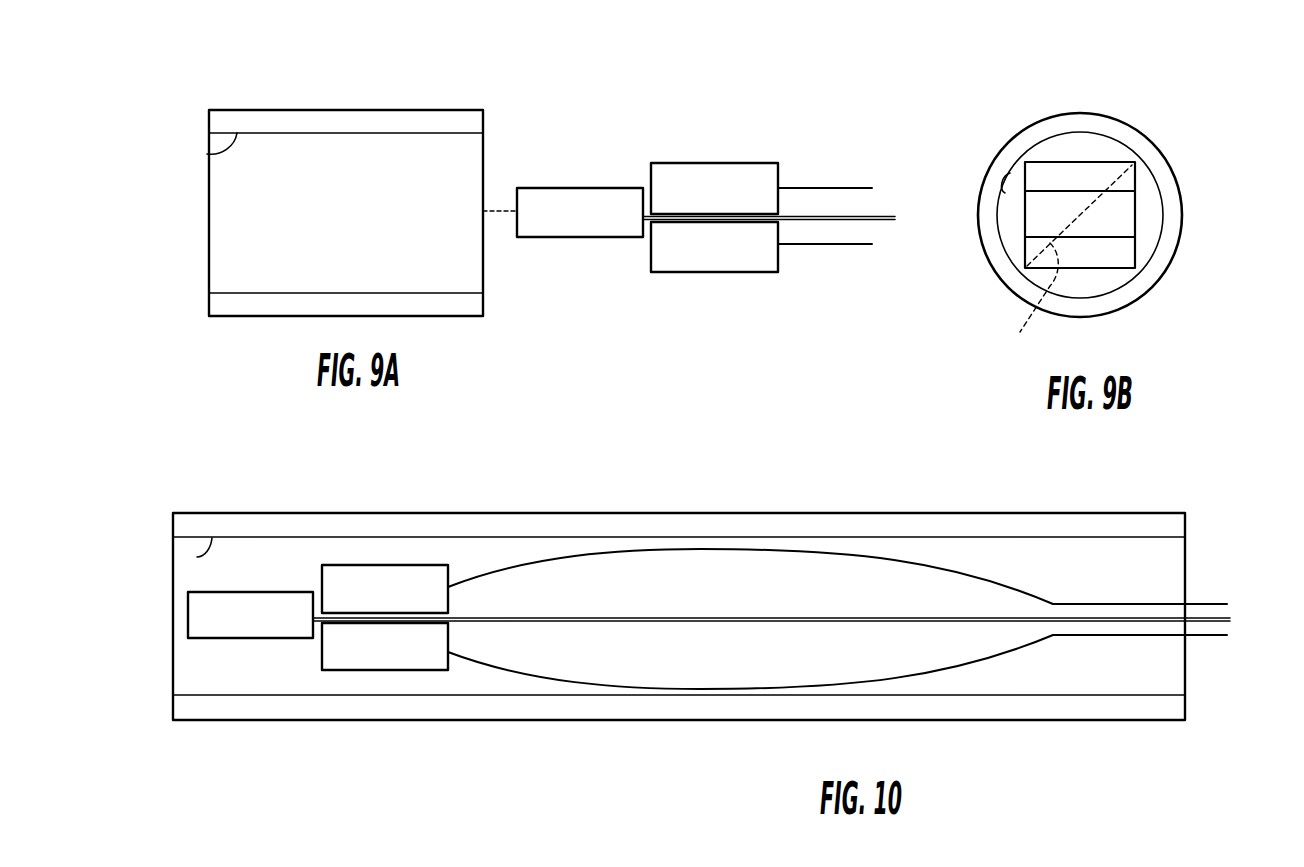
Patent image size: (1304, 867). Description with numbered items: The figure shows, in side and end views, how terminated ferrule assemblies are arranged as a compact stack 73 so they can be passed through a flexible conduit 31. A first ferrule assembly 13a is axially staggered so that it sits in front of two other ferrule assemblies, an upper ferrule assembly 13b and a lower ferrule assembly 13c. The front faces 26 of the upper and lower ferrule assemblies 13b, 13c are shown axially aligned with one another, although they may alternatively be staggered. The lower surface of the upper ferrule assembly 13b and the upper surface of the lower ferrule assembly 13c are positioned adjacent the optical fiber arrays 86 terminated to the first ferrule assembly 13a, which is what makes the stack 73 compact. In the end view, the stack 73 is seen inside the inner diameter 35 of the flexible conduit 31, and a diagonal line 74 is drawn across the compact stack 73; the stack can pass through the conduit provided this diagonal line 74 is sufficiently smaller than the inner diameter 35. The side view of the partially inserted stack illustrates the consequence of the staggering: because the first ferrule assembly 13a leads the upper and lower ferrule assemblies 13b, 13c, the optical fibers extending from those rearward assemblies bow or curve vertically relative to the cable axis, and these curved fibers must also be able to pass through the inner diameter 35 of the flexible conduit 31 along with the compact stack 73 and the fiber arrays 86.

In FIG. 9A, the flexible conduit 31 is at (327, 110).
In FIG. 9B, the flexible conduit 31 is at (1027, 125).
In FIG. 10, the flexible conduit 31 is at (281, 513).
In FIG. 9A, the inner diameter 35 is at (207, 154).
In FIG. 9B, the inner diameter 35 is at (1006, 172).
In FIG. 10, the inner diameter 35 is at (197, 557).
In FIG. 9A, the first ferrule assembly 13a is at (580, 188).
In FIG. 9B, the first ferrule assembly 13a is at (1133, 217).
In FIG. 10, the first ferrule assembly 13a is at (253, 638).
In FIG. 9A, the upper ferrule assembly 13b is at (688, 163).
In FIG. 9B, the upper ferrule assembly 13b is at (1135, 178).
In FIG. 10, the upper ferrule assembly 13b is at (395, 565).
In FIG. 9A, the lower ferrule assembly 13c is at (720, 272).
In FIG. 9B, the lower ferrule assembly 13c is at (1133, 255).
In FIG. 10, the lower ferrule assembly 13c is at (385, 670).
In FIG. 9A, the front faces 26 is at (651, 178).
In FIG. 9A, the compact stack 73 is at (727, 88).
In FIG. 9B, the compact stack 73 is at (1087, 152).
In FIG. 10, the compact stack 73 is at (357, 546).
In FIG. 9B, the diagonal line 74 is at (1065, 262).
In FIG. 9A, the optical fiber arrays 86 is at (842, 244).
In FIG. 10, the optical fiber arrays 86 is at (725, 550).